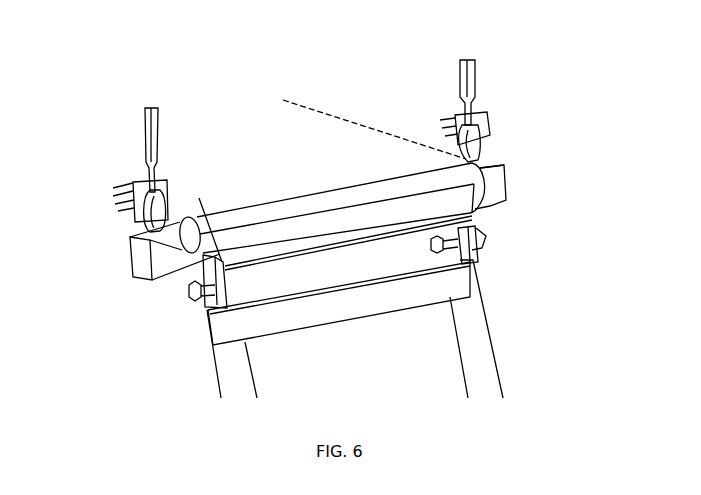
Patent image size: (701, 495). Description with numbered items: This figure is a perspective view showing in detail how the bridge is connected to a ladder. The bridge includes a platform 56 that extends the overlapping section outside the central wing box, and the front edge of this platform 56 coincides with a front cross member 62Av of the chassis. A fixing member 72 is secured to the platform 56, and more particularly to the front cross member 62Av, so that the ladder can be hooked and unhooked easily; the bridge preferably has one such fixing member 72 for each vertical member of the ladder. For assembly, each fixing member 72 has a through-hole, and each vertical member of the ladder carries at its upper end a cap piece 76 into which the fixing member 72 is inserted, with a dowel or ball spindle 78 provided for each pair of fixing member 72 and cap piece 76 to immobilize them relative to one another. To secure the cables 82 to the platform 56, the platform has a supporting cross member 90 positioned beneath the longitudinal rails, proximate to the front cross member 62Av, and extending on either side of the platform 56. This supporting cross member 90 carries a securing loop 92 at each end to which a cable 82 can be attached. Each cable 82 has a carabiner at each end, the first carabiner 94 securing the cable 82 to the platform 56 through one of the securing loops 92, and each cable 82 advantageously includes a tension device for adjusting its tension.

The platform 56 is at (335, 130).
The front cross member 62Av is at (193, 216).
The fixing member 72 is at (205, 272).
The cap piece 76 is at (232, 290).
The dowel or ball spindle 78 is at (196, 306).
The cable 82 is at (145, 138).
The supporting cross member 90 is at (130, 250).
The securing loop 92 is at (147, 222).
The first carabiner 94 is at (117, 190).